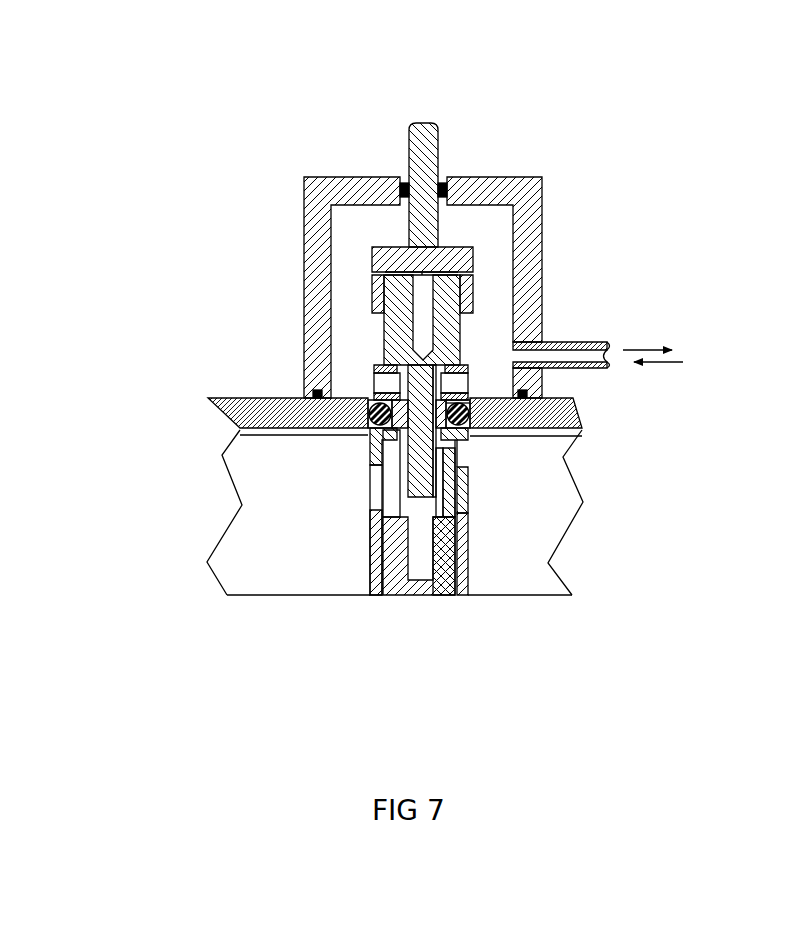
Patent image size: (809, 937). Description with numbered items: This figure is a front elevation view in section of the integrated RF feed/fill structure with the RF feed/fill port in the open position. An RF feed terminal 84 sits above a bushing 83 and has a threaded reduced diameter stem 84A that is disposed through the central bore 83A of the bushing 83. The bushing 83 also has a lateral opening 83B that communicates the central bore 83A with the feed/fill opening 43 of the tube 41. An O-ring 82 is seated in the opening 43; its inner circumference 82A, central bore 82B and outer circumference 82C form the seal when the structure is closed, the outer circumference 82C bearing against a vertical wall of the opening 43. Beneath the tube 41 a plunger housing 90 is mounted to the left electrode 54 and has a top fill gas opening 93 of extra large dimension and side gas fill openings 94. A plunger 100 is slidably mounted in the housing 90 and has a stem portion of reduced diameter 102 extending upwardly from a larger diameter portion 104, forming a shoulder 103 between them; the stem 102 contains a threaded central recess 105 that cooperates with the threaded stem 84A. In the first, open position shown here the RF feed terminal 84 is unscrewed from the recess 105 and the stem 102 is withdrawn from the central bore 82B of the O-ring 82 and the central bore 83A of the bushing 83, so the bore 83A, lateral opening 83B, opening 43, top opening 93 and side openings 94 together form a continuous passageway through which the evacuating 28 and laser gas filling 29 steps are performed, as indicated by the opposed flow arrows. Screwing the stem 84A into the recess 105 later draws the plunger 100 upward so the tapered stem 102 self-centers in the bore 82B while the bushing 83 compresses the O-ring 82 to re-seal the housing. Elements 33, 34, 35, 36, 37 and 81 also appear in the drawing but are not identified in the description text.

The evacuating step 28 is at (653, 345).
The laser gas filling step 29 is at (657, 360).
The housing 33 is at (316, 196).
The actuator rod 34 is at (429, 128).
The rod flange 35 is at (456, 250).
The seal 36 is at (442, 183).
The seal 37 is at (398, 262).
The tube 41 is at (243, 403).
The feed/fill opening 43 is at (468, 410).
The left electrode 54 is at (537, 585).
The O-ring seal 81 is at (370, 455).
The O-ring 82 is at (366, 398).
The inner circumference of O-ring 82A is at (462, 440).
The central bore of O-ring 82B is at (372, 440).
The outer circumference of O-ring 82C is at (470, 408).
The bushing 83 is at (378, 365).
The central bore of bushing 83A is at (458, 376).
The lateral opening of bushing 83B is at (456, 398).
The RF feed terminal 84 is at (380, 300).
The threaded stem of RF feed terminal 84A is at (437, 478).
The plunger housing 90 is at (440, 533).
The top fill gas opening 93 is at (372, 500).
The side gas fill opening 94 is at (372, 537).
The plunger 100 is at (462, 583).
The stem portion of reduced diameter 102 is at (439, 487).
The shoulder 103 is at (447, 500).
The larger diameter portion 104 is at (447, 548).
The threaded central recess 105 is at (458, 515).